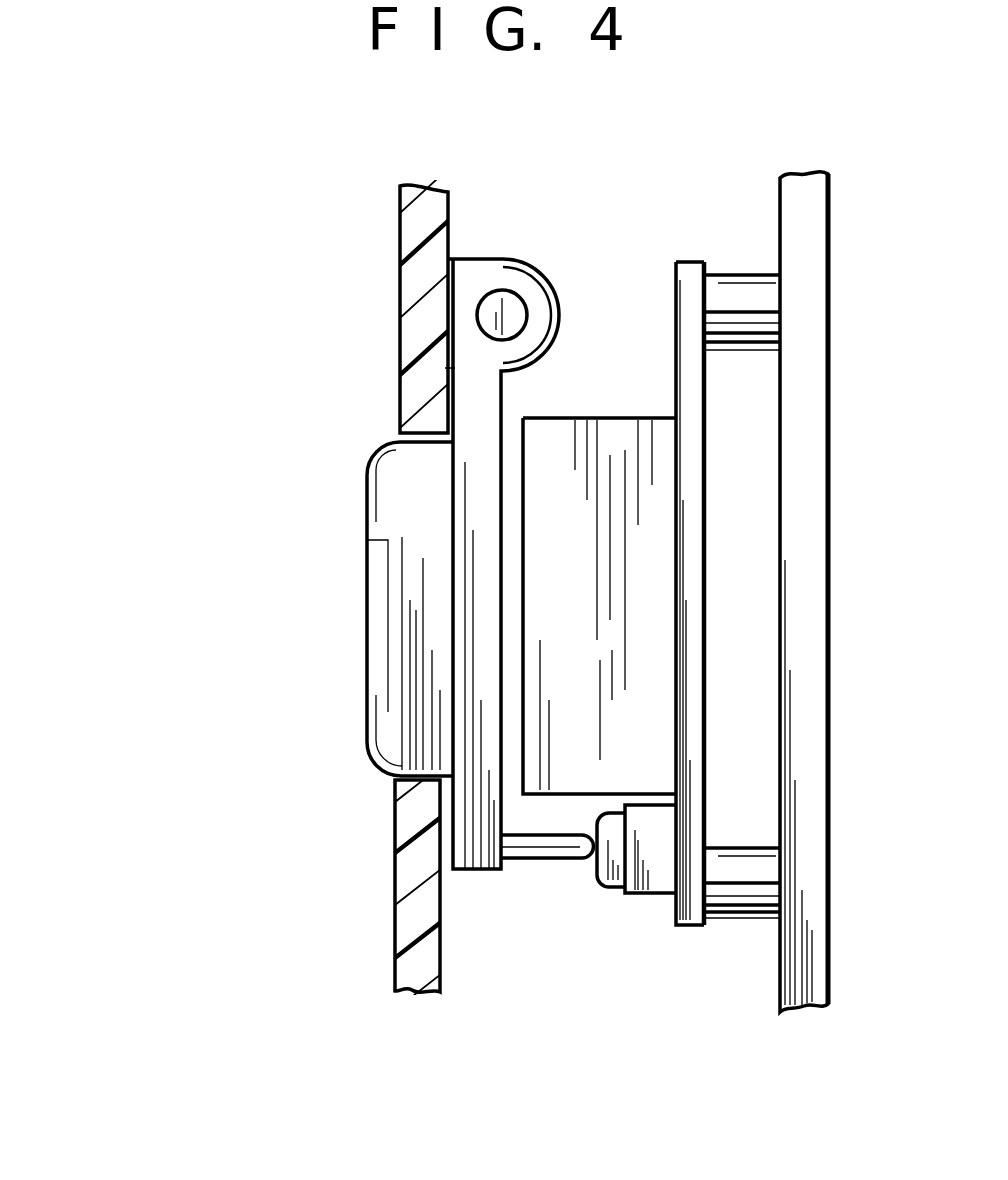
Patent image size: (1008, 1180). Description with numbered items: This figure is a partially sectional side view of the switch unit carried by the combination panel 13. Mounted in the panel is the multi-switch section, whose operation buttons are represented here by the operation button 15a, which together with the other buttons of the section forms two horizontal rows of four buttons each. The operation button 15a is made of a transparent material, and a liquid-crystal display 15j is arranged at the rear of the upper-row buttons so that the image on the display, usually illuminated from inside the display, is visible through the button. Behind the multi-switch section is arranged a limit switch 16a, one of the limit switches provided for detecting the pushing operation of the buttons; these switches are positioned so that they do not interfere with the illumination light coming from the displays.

The combination panel 13 is at (408, 302).
The operation button 15a is at (372, 539).
The liquid-crystal display 15j is at (613, 414).
The limit switch 16a is at (638, 895).